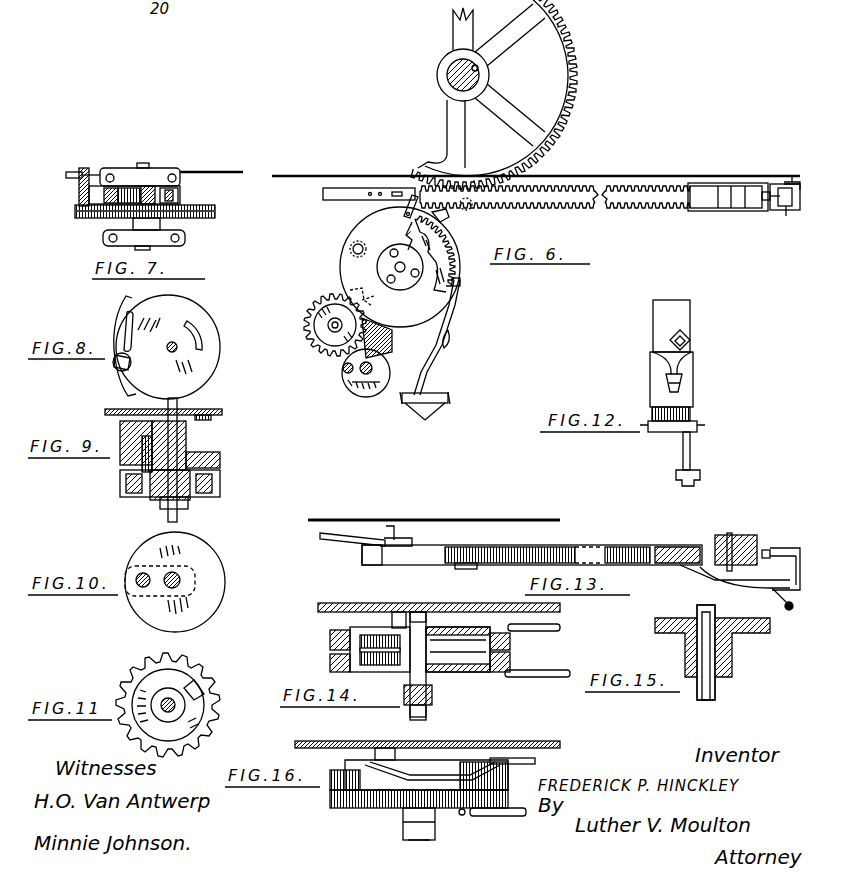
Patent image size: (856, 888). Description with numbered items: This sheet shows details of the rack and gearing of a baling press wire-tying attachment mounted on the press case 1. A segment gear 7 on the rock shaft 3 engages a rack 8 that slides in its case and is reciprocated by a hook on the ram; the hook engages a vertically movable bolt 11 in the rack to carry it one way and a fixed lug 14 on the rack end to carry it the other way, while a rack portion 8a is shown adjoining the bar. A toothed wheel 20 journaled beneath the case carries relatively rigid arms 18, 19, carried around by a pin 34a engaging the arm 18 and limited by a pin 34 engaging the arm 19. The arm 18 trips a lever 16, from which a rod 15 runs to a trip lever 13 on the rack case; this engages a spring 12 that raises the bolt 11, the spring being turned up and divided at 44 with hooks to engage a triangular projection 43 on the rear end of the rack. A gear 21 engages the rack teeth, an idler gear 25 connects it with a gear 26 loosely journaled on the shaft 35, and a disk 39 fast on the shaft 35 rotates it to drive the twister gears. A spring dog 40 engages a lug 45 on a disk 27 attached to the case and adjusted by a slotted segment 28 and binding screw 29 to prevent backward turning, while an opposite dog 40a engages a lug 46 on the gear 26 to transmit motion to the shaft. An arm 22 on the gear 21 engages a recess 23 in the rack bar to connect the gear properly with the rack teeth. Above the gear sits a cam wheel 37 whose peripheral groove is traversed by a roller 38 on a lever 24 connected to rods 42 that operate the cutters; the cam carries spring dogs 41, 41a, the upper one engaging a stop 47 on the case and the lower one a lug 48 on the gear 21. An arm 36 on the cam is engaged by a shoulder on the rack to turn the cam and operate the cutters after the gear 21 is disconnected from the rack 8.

In FIG. 13, the case 1 is at (445, 519).
In FIG. 14, the case 1 is at (352, 609).
In FIG. 16, the case 1 is at (330, 742).
In FIG. 6, the rock shaft 3 is at (448, 76).
In FIG. 6, the segment gear 7 is at (566, 90).
In FIG. 6, the rack 8 is at (548, 192).
In FIG. 12, the rack 8 is at (655, 319).
In FIG. 13, the rack 8 is at (618, 548).
In FIG. 6, the rack portion 8a is at (352, 199).
In FIG. 13, the rack portion 8a is at (346, 541).
In FIG. 13, the bolt 11 is at (730, 545).
In FIG. 12, the spring 12 is at (692, 413).
In FIG. 13, the spring 12 is at (736, 583).
In FIG. 6, the trip lever 13 is at (792, 180).
In FIG. 12, the trip lever 13 is at (692, 452).
In FIG. 13, the trip lever 13 is at (782, 602).
In FIG. 13, the fixed lug 14 is at (752, 540).
In FIG. 6, the rod 15 is at (672, 176).
In FIG. 7, the rod 15 is at (240, 170).
In FIG. 7, the lever 16 is at (78, 176).
In FIG. 7, the arm 18 is at (130, 188).
In FIG. 7, the arm 19 is at (178, 178).
In FIG. 7, the toothed wheel 20 is at (214, 212).
In FIG. 6, the gear 21 is at (452, 258).
In FIG. 14, the gear 21 is at (512, 662).
In FIG. 16, the gear 21 is at (386, 808).
In FIG. 6, the arm 22 is at (448, 214).
In FIG. 14, the arm 22 is at (522, 678).
In FIG. 16, the arm 22 is at (520, 816).
In FIG. 6, the recess 23 is at (472, 208).
In FIG. 13, the recess 23 is at (464, 568).
In FIG. 6, the lever 24 is at (450, 322).
In FIG. 6, the idler gear 25 is at (318, 315).
In FIG. 6, the gear 26 is at (383, 344).
In FIG. 9, the gear 26 is at (220, 486).
In FIG. 11, the gear 26 is at (140, 680).
In FIG. 8, the disk 27 is at (186, 311).
In FIG. 9, the disk 27 is at (200, 409).
In FIG. 8, the slotted segment 28 is at (118, 328).
In FIG. 9, the slotted segment 28 is at (108, 410).
In FIG. 8, the binding screw 29 is at (112, 363).
In FIG. 7, the pin 34 is at (170, 188).
In FIG. 7, the pin 34a is at (110, 188).
In FIG. 6, the shaft 35 is at (368, 376).
In FIG. 9, the shaft 35 is at (178, 516).
In FIG. 10, the shaft 35 is at (182, 580).
In FIG. 6, the arm 36 is at (410, 198).
In FIG. 14, the arm 36 is at (536, 628).
In FIG. 16, the arm 36 is at (512, 760).
In FIG. 6, the cam wheel 37 is at (352, 265).
In FIG. 14, the cam wheel 37 is at (330, 638).
In FIG. 15, the cam wheel 37 is at (772, 634).
In FIG. 16, the cam wheel 37 is at (336, 796).
In FIG. 6, the roller 38 is at (462, 282).
In FIG. 16, the roller 38 is at (458, 815).
In FIG. 6, the disk 39 is at (352, 388).
In FIG. 9, the disk 39 is at (196, 456).
In FIG. 10, the disk 39 is at (210, 600).
In FIG. 6, the spring dog 40 is at (343, 369).
In FIG. 9, the spring dog 40 is at (120, 430).
In FIG. 10, the spring dog 40 is at (138, 575).
In FIG. 9, the dog 40a is at (136, 482).
In FIG. 6, the spring dog 41 is at (352, 248).
In FIG. 14, the spring dog 41 is at (416, 613).
In FIG. 15, the spring dog 41 is at (715, 618).
In FIG. 14, the spring dog 41a is at (392, 690).
In FIG. 15, the spring dog 41a is at (716, 694).
In FIG. 6, the rods 42 is at (425, 412).
In FIG. 6, the triangular projection 43 is at (786, 214).
In FIG. 12, the triangular projection 43 is at (690, 339).
In FIG. 13, the triangular projection 43 is at (797, 548).
In FIG. 6, the divided end 44 is at (760, 210).
In FIG. 12, the divided end 44 is at (644, 380).
In FIG. 13, the divided end 44 is at (770, 552).
In FIG. 8, the lug 45 is at (200, 340).
In FIG. 9, the lug 45 is at (212, 418).
In FIG. 9, the lug 46 is at (198, 494).
In FIG. 11, the lug 46 is at (206, 698).
In FIG. 14, the stop 47 is at (400, 613).
In FIG. 16, the stop 47 is at (386, 758).
In FIG. 14, the lug 48 is at (384, 662).